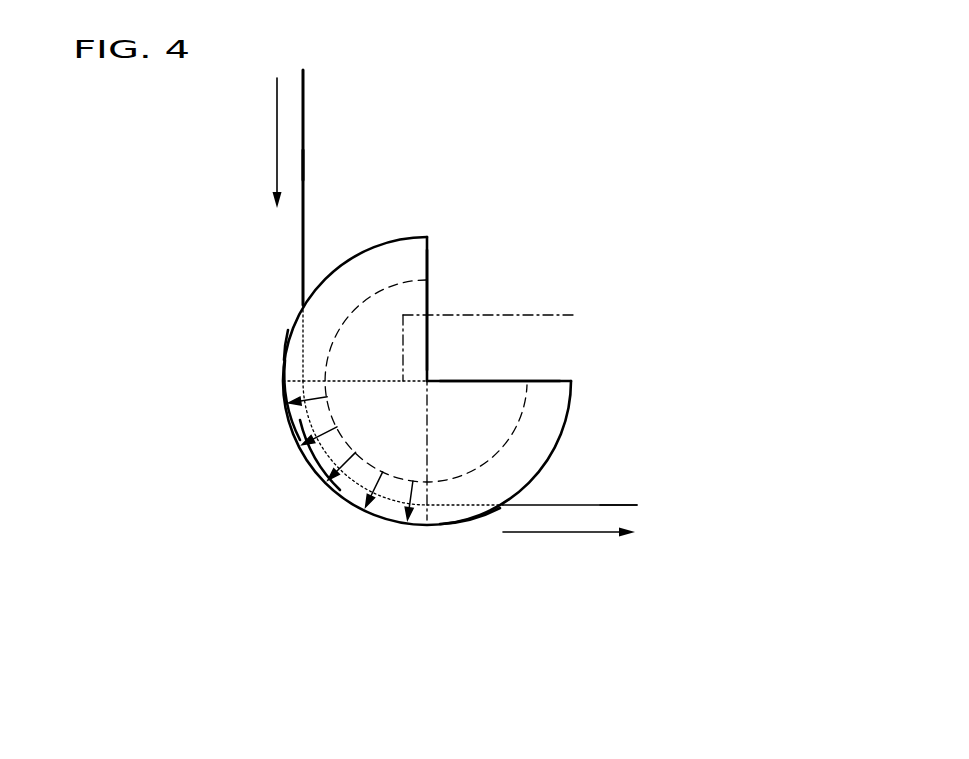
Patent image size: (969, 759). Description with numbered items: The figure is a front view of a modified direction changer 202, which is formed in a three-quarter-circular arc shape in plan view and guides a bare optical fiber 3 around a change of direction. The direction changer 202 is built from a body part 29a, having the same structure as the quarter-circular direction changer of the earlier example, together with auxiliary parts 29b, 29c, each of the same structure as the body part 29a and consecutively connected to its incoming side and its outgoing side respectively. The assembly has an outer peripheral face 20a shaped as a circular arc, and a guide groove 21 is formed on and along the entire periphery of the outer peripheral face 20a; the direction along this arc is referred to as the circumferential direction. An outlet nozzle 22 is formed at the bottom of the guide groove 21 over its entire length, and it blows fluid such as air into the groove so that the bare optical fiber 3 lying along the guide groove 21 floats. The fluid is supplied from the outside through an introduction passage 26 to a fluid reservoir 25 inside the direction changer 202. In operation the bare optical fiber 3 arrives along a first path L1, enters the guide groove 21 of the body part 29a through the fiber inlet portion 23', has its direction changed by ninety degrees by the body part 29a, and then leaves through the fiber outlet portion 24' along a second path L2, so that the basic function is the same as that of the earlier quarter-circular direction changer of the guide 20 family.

The bare optical fiber 3 is at (303, 107).
The first line portion of wire L1 is at (303, 163).
The second line portion of wire L2 is at (620, 505).
The guide member 20 is at (427, 342).
The direction changer 202 is at (416, 237).
The outer peripheral face 20a is at (303, 458).
The guide groove 21 is at (364, 459).
The outlet nozzle 22 is at (378, 478).
The fiber inlet portion 23' is at (246, 345).
The fiber outlet portion 24' is at (470, 558).
The fluid reservoir 25 is at (392, 411).
The introduction passage 26 is at (536, 315).
The body part 29a is at (320, 458).
The auxiliary part 29b is at (418, 309).
The auxiliary part 29c is at (500, 392).